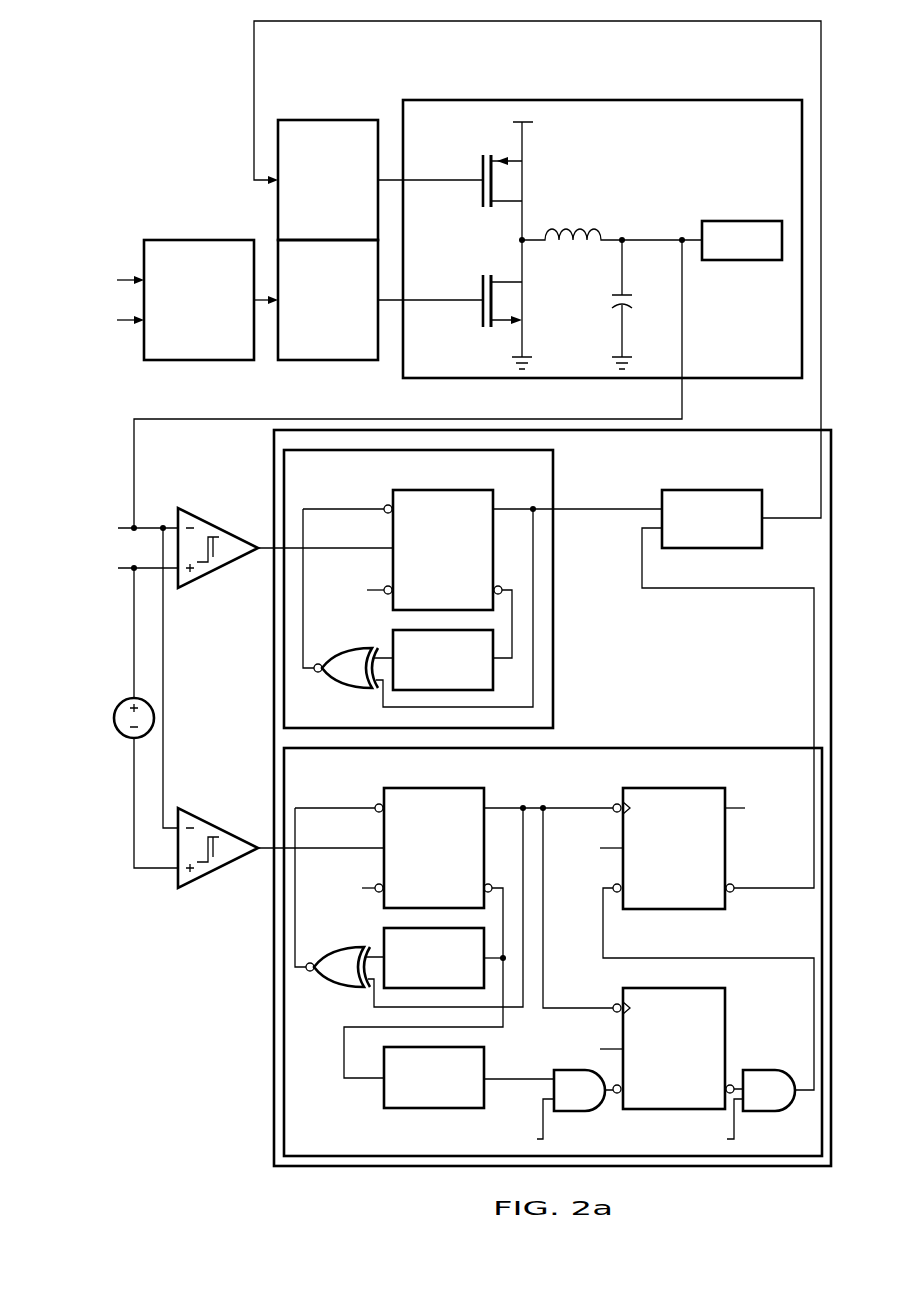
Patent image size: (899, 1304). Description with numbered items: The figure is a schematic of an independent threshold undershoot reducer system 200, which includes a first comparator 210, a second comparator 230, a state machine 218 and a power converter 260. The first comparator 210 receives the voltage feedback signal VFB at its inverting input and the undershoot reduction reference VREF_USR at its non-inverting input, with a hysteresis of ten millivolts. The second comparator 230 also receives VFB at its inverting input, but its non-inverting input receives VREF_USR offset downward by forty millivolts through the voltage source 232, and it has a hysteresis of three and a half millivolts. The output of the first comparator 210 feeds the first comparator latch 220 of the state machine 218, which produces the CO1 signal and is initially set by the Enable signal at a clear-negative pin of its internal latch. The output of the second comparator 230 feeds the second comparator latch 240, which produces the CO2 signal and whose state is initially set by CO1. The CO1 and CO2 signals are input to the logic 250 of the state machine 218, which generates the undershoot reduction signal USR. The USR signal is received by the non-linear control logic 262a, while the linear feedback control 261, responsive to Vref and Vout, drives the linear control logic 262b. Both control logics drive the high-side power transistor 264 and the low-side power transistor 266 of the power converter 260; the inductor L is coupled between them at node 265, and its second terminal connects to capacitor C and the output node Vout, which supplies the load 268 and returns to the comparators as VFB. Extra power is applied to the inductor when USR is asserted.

The independent threshold undershoot reducer system 200 is at (119, 67).
The power converter 260 is at (623, 92).
The linear feedback control 261 is at (198, 240).
The non-linear control logic 262a is at (325, 120).
The linear control logic 262b is at (325, 360).
The high-side power transistor 264 is at (480, 170).
The node 265 is at (518, 243).
The low-side power transistor 266 is at (480, 290).
The load 268 is at (742, 221).
The first comparator 210 is at (222, 530).
The first comparator latch 220 is at (560, 482).
The second comparator 230 is at (222, 866).
The voltage source 232 is at (122, 740).
The second comparator latch 240 is at (606, 740).
The logic 250 is at (712, 490).
The state machine 218 is at (714, 1176).